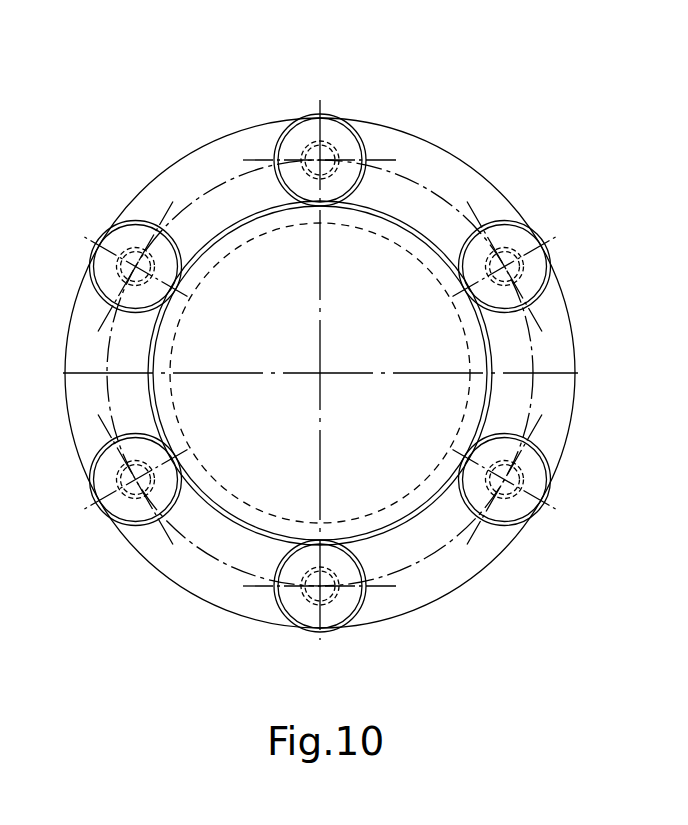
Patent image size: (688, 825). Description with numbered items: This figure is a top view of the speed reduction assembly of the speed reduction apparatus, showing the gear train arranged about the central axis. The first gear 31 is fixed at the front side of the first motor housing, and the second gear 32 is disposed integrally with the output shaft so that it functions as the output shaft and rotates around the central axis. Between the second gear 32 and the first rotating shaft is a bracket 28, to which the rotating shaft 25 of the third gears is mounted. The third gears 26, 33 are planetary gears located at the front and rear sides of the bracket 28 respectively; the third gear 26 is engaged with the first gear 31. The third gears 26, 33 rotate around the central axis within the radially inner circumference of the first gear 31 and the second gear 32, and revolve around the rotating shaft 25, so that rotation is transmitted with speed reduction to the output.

The rotating shaft 25 is at (310, 150).
The third gear 26 is at (348, 121).
The bracket 28 is at (233, 165).
The first gear 31 is at (250, 212).
The second gear 32 is at (387, 212).
The third gear 33 is at (353, 133).